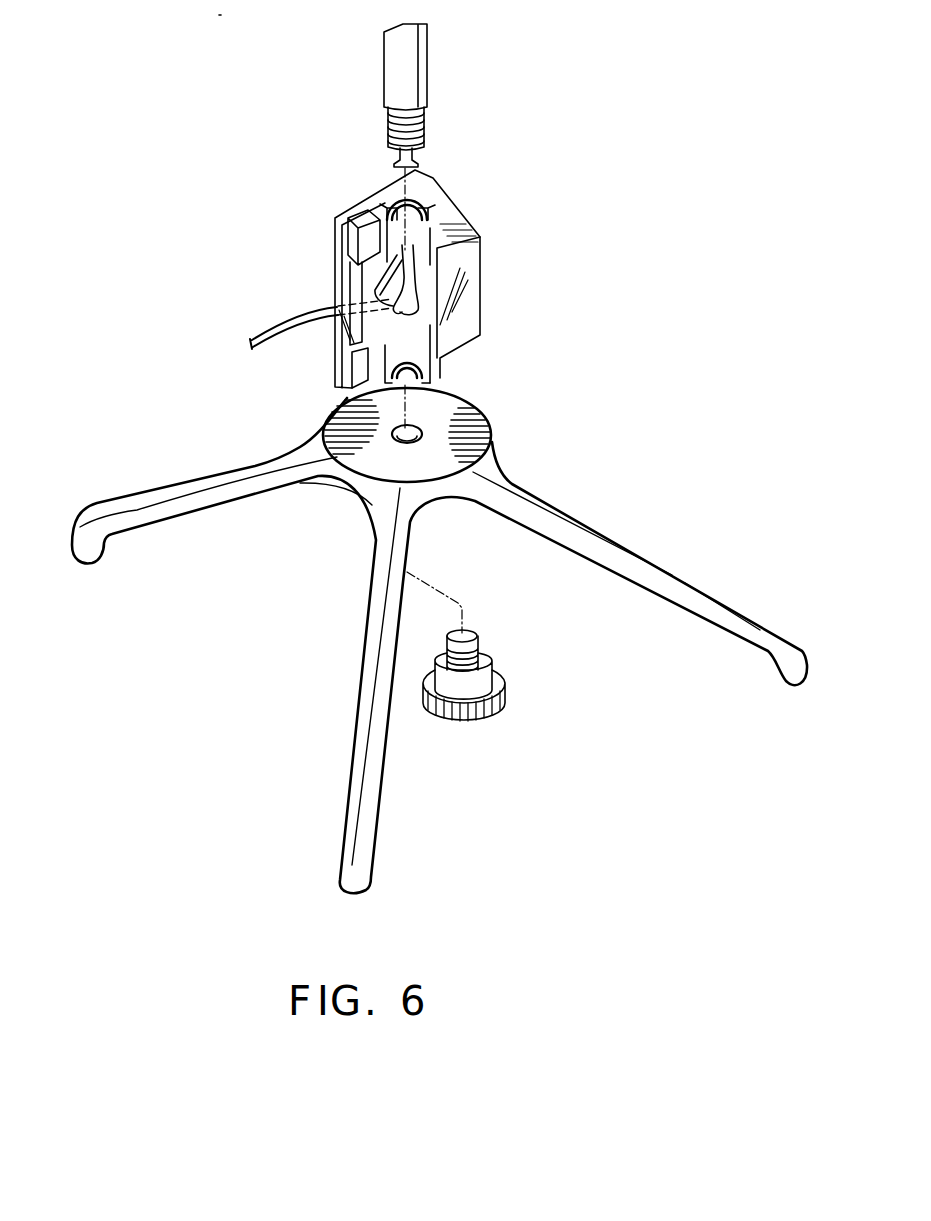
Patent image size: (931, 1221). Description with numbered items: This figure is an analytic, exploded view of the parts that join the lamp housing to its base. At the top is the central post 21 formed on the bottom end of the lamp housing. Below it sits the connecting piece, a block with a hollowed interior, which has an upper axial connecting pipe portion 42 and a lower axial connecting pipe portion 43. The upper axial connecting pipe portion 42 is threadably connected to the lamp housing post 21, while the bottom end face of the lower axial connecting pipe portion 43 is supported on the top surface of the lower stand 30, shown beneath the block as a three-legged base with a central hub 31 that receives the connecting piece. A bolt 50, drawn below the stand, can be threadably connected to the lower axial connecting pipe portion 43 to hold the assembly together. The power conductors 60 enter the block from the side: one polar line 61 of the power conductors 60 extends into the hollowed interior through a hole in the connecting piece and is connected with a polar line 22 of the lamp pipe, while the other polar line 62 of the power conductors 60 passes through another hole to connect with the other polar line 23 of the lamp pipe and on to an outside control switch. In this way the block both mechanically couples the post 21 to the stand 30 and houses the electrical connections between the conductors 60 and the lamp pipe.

The central post 21 is at (407, 77).
The polar line of the lamp pipe 22 is at (436, 255).
The other polar line of the lamp pipe 23 is at (405, 243).
The lower stand 30 is at (643, 560).
The hub 31 is at (470, 423).
The upper axial connecting pipe portion 42 is at (430, 215).
The lower axial connecting pipe portion 43 is at (338, 214).
The bolt 50 is at (505, 704).
The power conductors 60 is at (260, 328).
The polar line of the power conductors 61 is at (433, 303).
The other polar line of the power conductors 62 is at (407, 303).